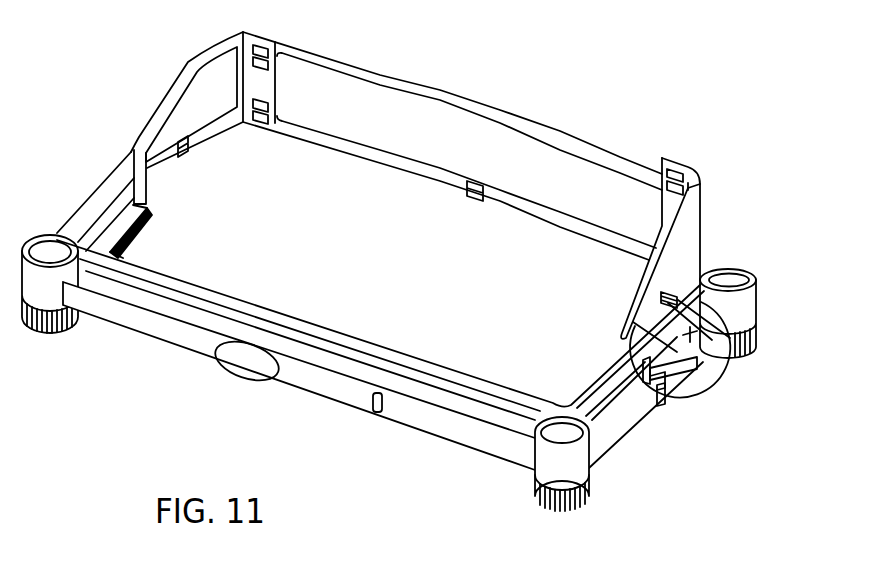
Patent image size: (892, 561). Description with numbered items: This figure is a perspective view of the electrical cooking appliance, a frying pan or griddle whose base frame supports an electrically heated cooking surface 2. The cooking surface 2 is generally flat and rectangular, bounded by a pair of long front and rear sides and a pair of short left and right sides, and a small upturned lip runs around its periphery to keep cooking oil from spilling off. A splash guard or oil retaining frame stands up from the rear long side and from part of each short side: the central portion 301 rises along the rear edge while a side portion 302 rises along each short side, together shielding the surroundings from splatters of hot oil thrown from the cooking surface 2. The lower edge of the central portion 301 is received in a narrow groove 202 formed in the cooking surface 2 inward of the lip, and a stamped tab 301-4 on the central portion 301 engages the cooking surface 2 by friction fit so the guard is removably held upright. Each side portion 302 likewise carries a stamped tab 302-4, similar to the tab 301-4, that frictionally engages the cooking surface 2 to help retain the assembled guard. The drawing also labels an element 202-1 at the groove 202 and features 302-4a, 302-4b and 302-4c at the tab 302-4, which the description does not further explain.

The cooking surface 2 is at (500, 327).
The narrow groove 202 is at (752, 278).
The foot latch member 202-1 is at (689, 382).
The central portion of splash guard 301 is at (418, 86).
The tab 301-4 is at (477, 181).
The side portion of splash guard 302 is at (690, 238).
The stamped tab 302-4 is at (693, 194).
The end wall latch portion a 302-4a is at (663, 420).
The end wall latch portion b 302-4b is at (688, 344).
The end wall latch portion c 302-4c is at (662, 310).